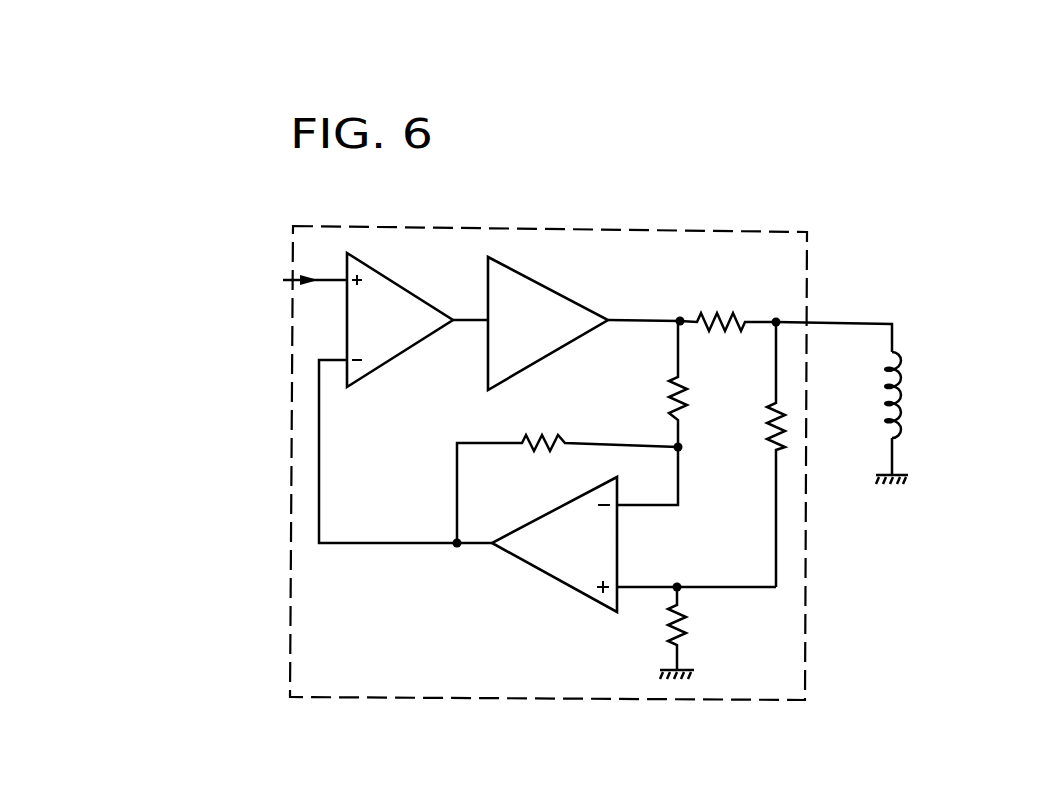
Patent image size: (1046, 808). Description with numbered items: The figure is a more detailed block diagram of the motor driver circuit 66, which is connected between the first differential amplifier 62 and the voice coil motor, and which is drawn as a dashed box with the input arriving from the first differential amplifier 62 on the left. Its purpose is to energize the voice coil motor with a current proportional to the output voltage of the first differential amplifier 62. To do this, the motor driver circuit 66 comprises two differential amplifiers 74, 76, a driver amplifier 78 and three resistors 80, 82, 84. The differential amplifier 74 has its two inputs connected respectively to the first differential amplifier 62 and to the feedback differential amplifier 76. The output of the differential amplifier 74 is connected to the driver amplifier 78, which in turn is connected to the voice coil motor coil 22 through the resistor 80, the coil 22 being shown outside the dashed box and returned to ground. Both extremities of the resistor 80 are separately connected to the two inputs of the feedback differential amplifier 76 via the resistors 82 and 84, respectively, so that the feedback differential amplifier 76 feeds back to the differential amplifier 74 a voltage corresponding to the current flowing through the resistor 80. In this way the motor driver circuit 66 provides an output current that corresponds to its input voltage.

The voice coil motor coil 22 is at (888, 409).
The first differential amplifier 62 is at (190, 268).
The motor driver circuit 66 is at (810, 302).
The differential amplifier 74 is at (418, 298).
The feedback differential amplifier 76 is at (550, 576).
The driver amplifier 78 is at (575, 302).
The resistor 80 is at (716, 312).
The resistor 82 is at (669, 404).
The resistor 84 is at (767, 420).